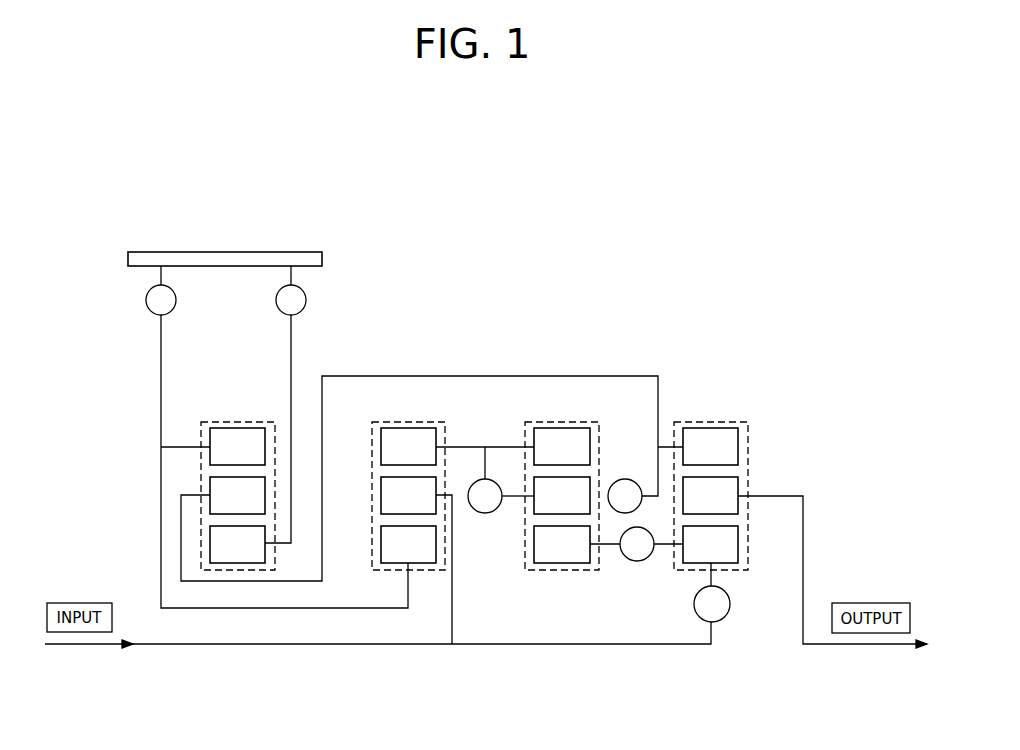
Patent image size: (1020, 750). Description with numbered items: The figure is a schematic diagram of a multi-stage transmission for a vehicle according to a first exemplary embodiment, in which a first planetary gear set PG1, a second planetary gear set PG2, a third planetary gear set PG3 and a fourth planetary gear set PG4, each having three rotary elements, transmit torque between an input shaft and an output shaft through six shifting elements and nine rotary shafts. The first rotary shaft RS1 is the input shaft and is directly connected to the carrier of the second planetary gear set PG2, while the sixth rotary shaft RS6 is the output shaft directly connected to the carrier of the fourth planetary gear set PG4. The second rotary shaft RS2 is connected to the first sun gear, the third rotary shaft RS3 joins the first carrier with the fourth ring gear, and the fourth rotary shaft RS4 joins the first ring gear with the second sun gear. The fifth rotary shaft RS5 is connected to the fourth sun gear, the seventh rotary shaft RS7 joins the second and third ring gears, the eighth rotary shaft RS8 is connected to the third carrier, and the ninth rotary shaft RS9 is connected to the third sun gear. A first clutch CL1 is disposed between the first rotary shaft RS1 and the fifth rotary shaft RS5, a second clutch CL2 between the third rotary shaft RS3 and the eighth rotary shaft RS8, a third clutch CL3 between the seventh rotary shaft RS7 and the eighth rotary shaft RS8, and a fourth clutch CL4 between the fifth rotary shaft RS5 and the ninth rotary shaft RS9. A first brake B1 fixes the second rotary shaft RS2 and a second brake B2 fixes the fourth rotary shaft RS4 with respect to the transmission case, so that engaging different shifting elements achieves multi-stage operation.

The first rotary shaft RS1 is at (453, 622).
The second rotary shaft RS2 is at (279, 545).
The third rotary shaft RS3 is at (199, 583).
The fourth rotary shaft RS4 is at (368, 609).
The fifth rotary shaft RS5 is at (716, 584).
The sixth rotary shaft RS6 is at (785, 496).
The seventh rotary shaft RS7 is at (470, 447).
The eighth rotary shaft RS8 is at (512, 500).
The ninth rotary shaft RS9 is at (605, 547).
The first planetary gear set PG1 is at (238, 485).
The second planetary gear set PG2 is at (408, 485).
The third planetary gear set PG3 is at (562, 485).
The fourth planetary gear set PG4 is at (711, 485).
The first clutch CL1 is at (712, 604).
The second clutch CL2 is at (625, 496).
The third clutch CL3 is at (485, 496).
The fourth clutch CL4 is at (637, 544).
The first brake B1 is at (291, 290).
The second brake B2 is at (161, 290).